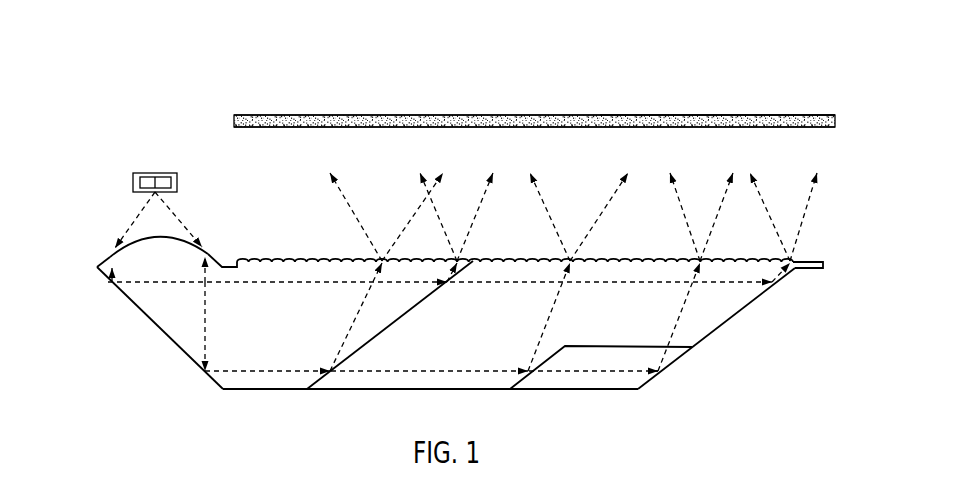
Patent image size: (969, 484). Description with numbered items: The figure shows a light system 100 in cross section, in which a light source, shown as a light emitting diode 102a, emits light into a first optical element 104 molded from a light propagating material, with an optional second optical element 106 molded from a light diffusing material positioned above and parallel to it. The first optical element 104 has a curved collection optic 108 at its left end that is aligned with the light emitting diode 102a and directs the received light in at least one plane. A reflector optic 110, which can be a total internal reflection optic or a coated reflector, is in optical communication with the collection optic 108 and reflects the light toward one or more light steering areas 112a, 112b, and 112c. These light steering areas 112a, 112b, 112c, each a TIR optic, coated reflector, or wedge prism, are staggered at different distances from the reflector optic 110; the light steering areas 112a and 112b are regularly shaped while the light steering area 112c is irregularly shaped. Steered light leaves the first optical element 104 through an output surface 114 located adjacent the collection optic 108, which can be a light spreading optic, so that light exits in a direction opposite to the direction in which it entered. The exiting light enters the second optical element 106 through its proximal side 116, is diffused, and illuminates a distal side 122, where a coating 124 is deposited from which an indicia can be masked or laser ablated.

The light system 100 is at (662, 58).
The light emitting diode 102a is at (167, 173).
The first optical element 104 is at (288, 335).
The second optical element 106 is at (753, 120).
The collection optic 108 is at (110, 258).
The reflector optic 110 is at (162, 331).
The light steering area 112a is at (327, 377).
The light steering area 112b is at (523, 377).
The light steering area 112c is at (722, 325).
The output surface 114 is at (350, 258).
The proximal side 116 is at (313, 127).
The distal side 122 is at (377, 115).
The coating 124 is at (692, 115).